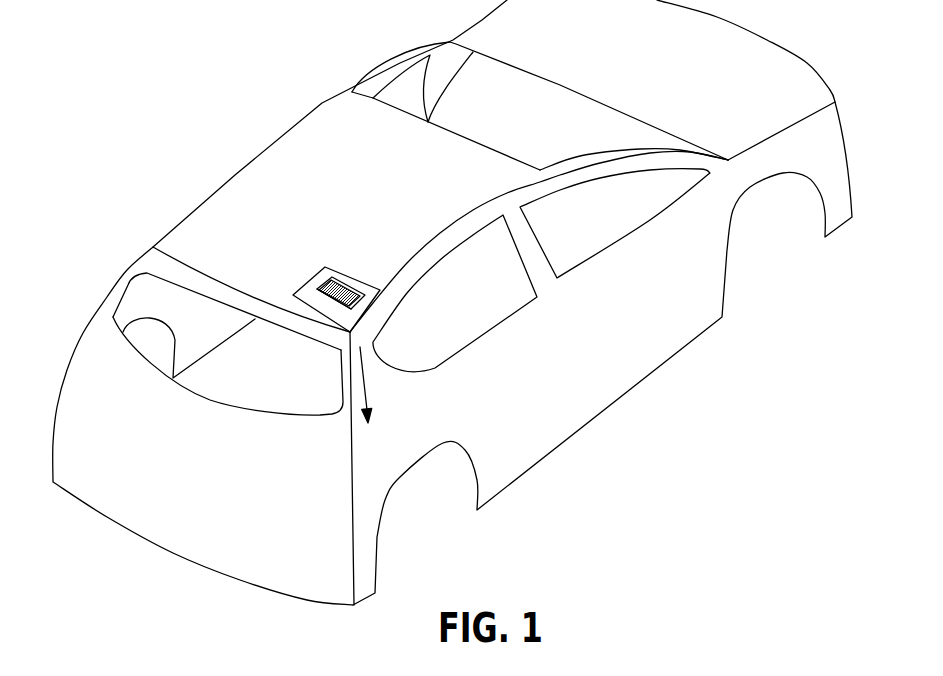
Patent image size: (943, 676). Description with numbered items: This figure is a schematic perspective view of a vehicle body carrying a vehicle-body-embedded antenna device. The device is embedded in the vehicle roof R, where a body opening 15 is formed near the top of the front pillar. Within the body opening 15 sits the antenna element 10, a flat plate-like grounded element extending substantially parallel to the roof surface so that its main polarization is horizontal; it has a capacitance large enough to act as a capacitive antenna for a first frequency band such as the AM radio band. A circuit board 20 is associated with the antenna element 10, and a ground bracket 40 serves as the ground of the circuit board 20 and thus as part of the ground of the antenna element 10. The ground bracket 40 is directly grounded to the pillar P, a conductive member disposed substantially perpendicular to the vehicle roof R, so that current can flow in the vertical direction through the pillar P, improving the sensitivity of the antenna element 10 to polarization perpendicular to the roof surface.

The vehicle roof R is at (214, 218).
The body opening 15 is at (310, 276).
The antenna element 10 is at (350, 286).
The circuit board 20 is at (362, 303).
The ground bracket 40 is at (343, 308).
The pillar P is at (357, 383).